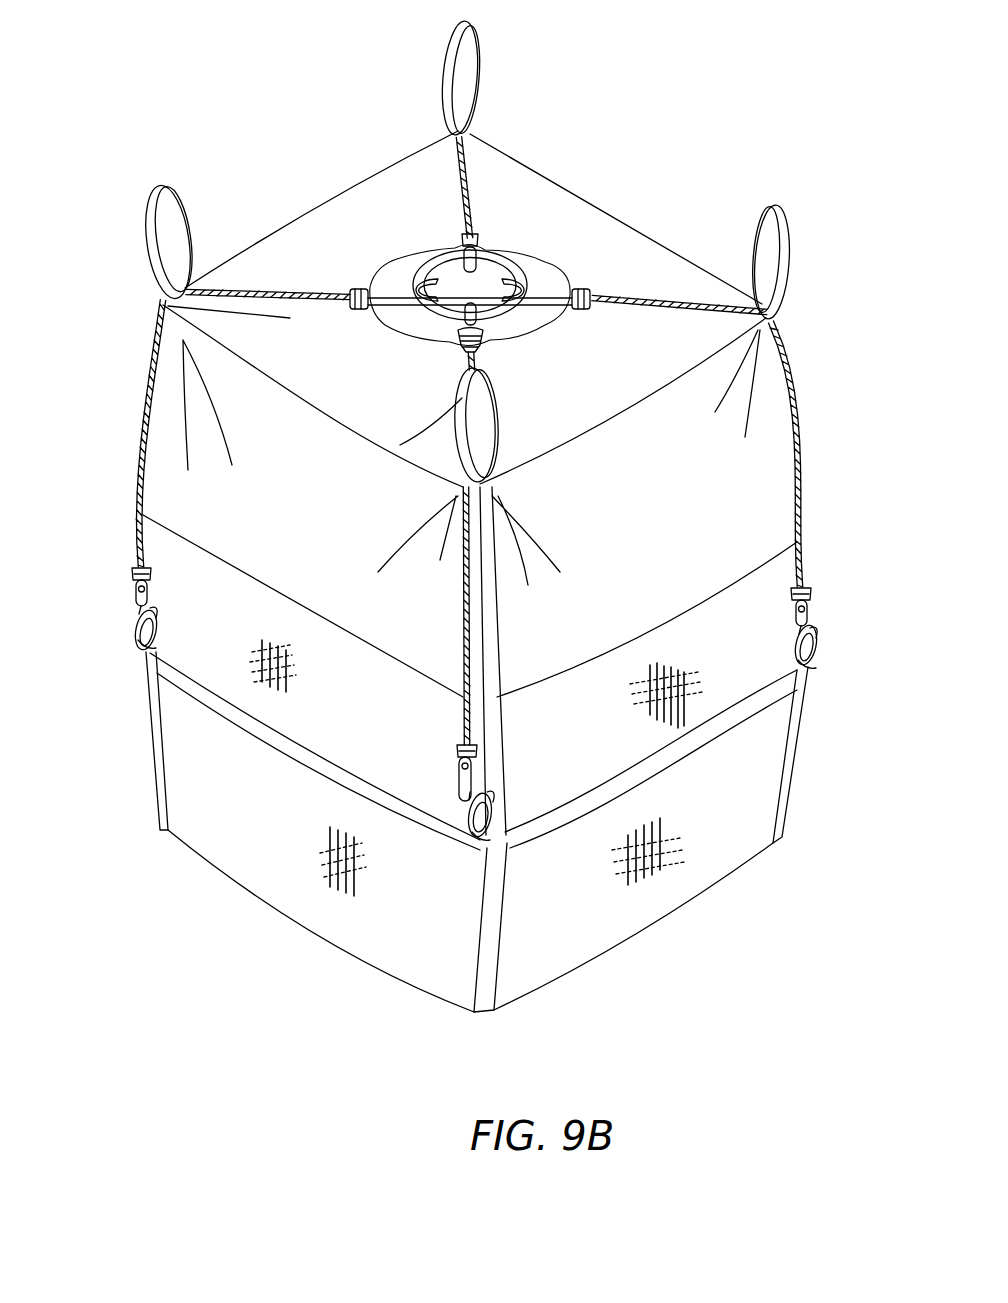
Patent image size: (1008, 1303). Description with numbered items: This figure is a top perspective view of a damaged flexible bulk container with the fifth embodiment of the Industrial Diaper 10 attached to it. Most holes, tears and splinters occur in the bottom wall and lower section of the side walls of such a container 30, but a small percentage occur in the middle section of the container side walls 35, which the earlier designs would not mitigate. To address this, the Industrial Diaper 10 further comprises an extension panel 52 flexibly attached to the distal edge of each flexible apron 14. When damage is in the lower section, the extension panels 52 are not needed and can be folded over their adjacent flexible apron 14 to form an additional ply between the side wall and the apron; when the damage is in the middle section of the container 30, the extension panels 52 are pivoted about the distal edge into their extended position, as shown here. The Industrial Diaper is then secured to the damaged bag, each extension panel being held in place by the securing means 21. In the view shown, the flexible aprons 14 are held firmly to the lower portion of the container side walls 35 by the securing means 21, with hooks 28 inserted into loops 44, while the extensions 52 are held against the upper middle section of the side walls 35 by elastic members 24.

The Industrial Diaper 10 is at (473, 548).
The flexible apron 14 is at (292, 950).
The securing means 21 is at (430, 250).
The elastic member 24 is at (137, 475).
The hook 28 is at (133, 587).
The container 30 is at (578, 176).
The container side wall 35 is at (313, 519).
The loop 44 is at (125, 635).
The extension panel 52 is at (223, 647).